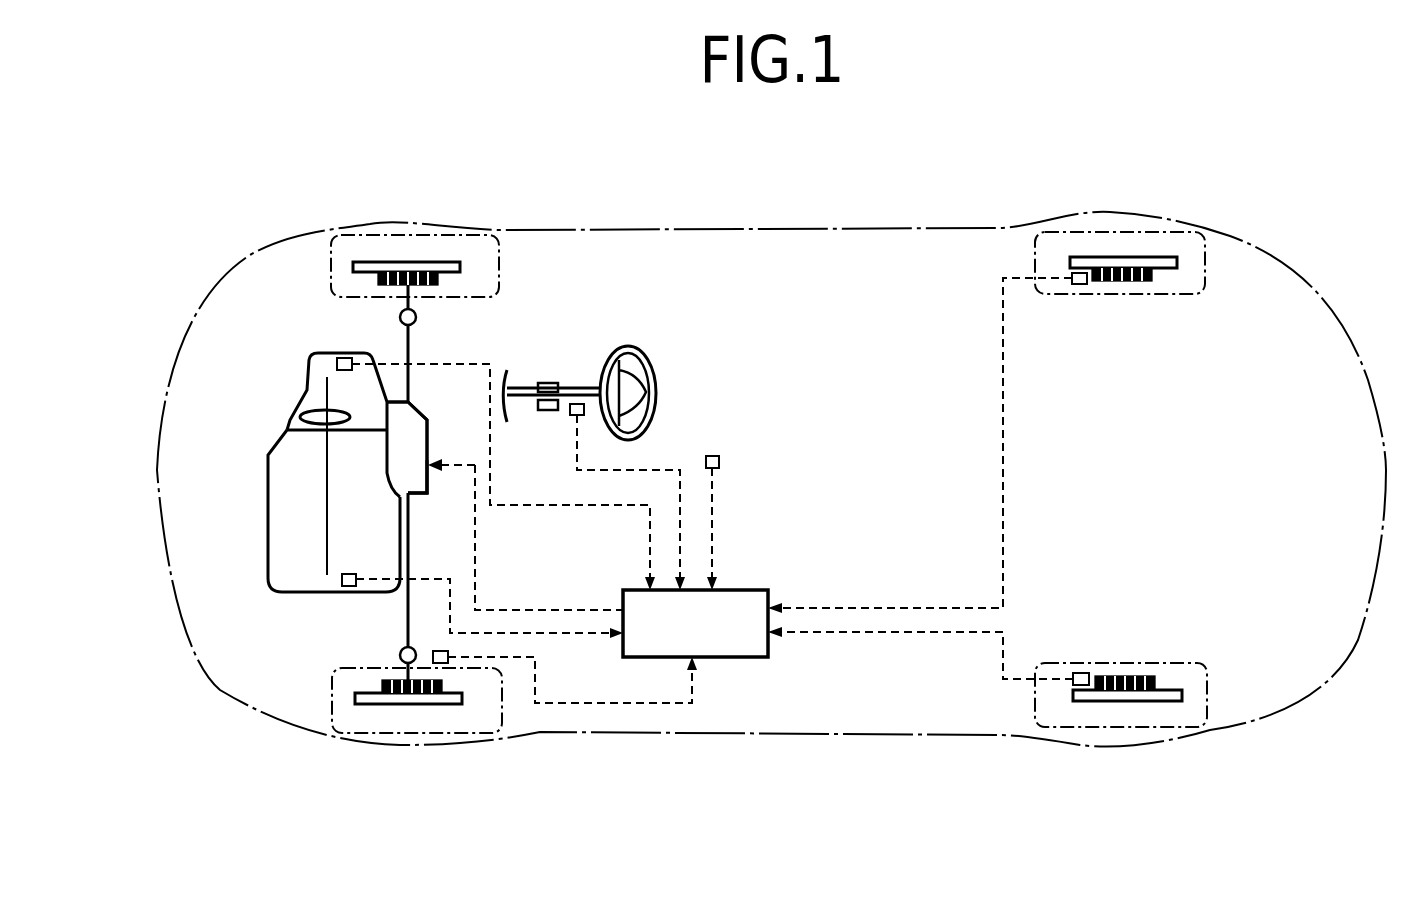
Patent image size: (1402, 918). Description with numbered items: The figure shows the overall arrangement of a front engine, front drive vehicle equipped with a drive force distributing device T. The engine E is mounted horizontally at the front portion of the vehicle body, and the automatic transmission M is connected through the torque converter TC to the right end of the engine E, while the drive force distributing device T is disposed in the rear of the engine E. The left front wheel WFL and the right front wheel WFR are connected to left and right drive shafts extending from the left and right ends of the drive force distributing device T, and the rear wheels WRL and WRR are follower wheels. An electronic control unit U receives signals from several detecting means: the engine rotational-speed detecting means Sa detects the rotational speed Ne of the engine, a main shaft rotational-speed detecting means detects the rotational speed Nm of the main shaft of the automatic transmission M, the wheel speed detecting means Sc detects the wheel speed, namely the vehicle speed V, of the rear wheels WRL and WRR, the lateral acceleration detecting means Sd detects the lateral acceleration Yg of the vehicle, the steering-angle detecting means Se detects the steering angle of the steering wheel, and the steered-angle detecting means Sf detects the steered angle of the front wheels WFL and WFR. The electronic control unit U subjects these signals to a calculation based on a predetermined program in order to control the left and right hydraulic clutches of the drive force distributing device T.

The right front wheel WFR is at (376, 235).
The left front wheel WFL is at (385, 740).
The right rear wheel WRR is at (1105, 232).
The left rear wheel WRL is at (1105, 728).
The automatic transmission M is at (310, 370).
The differential D is at (410, 422).
The drive force distributing device T is at (415, 487).
The engine E is at (268, 500).
The torque converter TC is at (318, 412).
The motor rotational speed sensor Sb is at (352, 358).
The engine rotational-speed detecting means Sa is at (348, 586).
The steered-angle detecting means Sf is at (442, 650).
The steering-angle detecting means Se is at (570, 414).
The lateral acceleration detecting means Sd is at (719, 462).
The wheel speed detecting means Sc is at (1079, 284).
The electronic control unit U is at (695, 623).
The rotational speed of the main shaft Nm is at (613, 552).
The yaw rate signal Yg is at (737, 552).
The wheel speed (vehicle speed) V is at (805, 624).
The rotational speed of the engine Ne is at (588, 656).